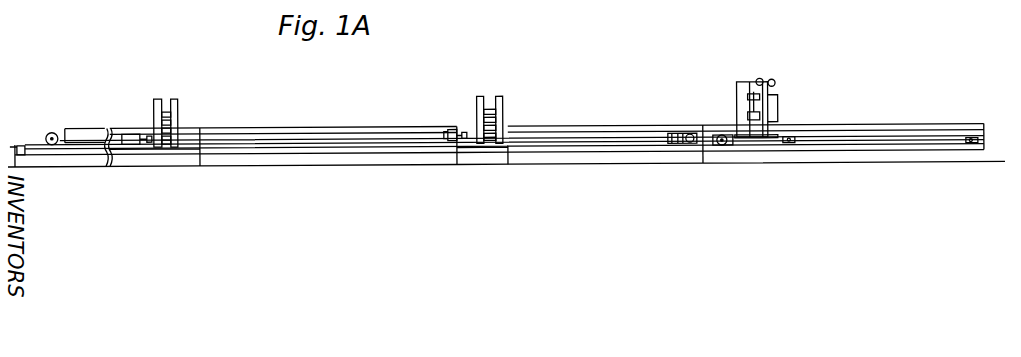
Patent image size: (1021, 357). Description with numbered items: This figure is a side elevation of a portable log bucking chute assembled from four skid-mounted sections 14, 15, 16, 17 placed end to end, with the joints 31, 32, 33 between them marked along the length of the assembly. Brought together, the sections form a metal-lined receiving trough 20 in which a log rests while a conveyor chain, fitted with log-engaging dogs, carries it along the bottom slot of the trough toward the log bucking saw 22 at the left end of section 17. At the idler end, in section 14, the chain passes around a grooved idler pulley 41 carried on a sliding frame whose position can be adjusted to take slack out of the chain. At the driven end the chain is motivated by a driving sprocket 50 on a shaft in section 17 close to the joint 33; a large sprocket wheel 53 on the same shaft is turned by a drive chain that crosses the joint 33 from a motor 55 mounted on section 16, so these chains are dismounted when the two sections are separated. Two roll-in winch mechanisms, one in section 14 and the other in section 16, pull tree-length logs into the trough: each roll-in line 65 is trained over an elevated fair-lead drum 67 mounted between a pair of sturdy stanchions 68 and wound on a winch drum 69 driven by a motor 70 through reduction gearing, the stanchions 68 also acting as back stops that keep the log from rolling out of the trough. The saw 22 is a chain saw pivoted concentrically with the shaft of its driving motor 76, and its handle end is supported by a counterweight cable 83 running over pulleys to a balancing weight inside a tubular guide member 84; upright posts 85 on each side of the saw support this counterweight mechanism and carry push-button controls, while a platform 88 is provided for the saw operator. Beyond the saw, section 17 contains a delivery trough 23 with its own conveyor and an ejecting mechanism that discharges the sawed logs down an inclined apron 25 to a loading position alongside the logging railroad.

The end section 14 is at (121, 168).
The section 15 is at (300, 168).
The section 16 is at (567, 168).
The section 17 is at (845, 168).
The receiving trough 20 is at (82, 130).
The log bucking saw 22 is at (748, 111).
The delivery trough 23 is at (985, 128).
The inclined apron 25 is at (880, 130).
The joint 31 is at (200, 161).
The joint 32 is at (455, 162).
The joint 33 is at (703, 162).
The grooved idler pulley 41 is at (47, 135).
The driving sprocket 50 is at (972, 149).
The large sprocket wheel 53 is at (722, 150).
The motor 55 is at (690, 137).
The roll-in line 65 is at (166, 145).
The elevated fair-lead drum 67 is at (156, 106).
The stanchions 68 is at (176, 100).
The winch drum 69 is at (171, 134).
The motor 70 is at (130, 136).
The driving motor 76 is at (752, 90).
The counterweight cable 83 is at (775, 86).
The tubular guide member 84 is at (779, 109).
The upright posts 85 is at (737, 90).
The platform 88 is at (775, 140).